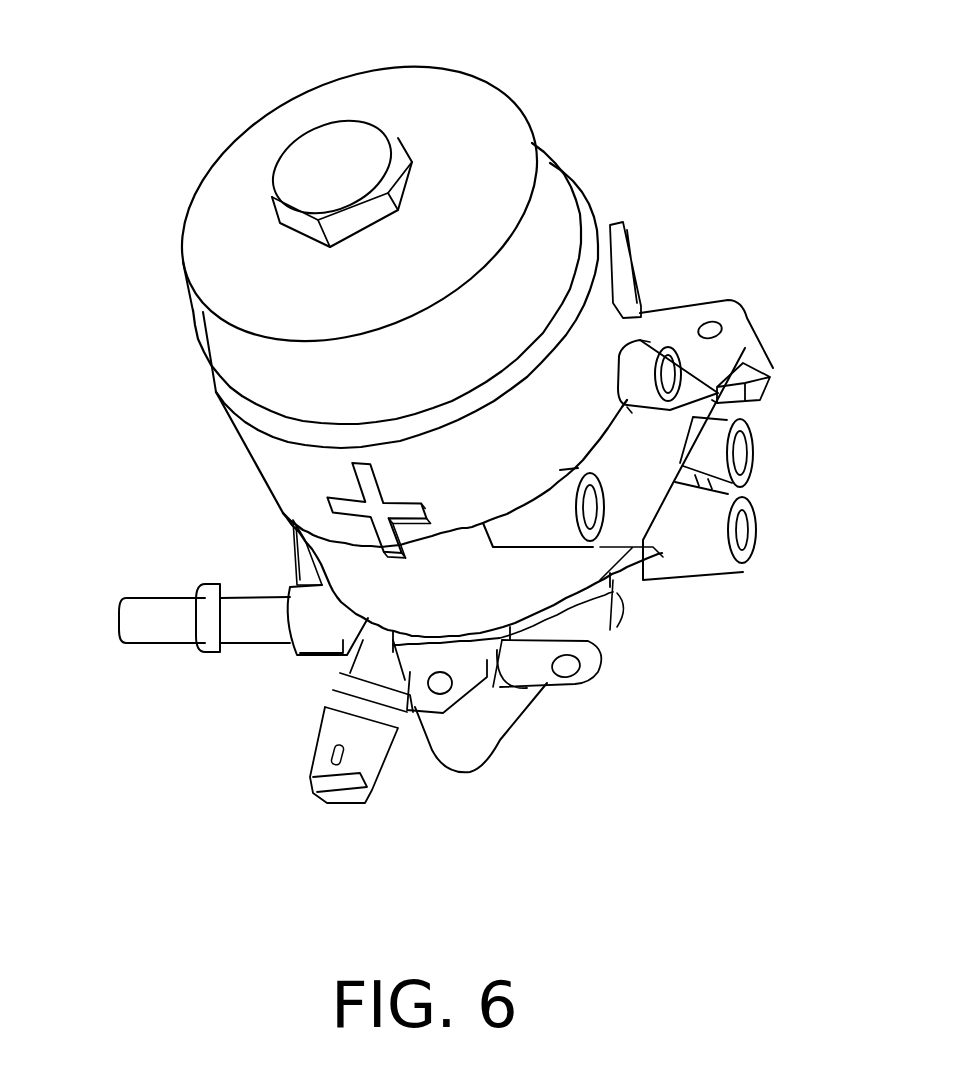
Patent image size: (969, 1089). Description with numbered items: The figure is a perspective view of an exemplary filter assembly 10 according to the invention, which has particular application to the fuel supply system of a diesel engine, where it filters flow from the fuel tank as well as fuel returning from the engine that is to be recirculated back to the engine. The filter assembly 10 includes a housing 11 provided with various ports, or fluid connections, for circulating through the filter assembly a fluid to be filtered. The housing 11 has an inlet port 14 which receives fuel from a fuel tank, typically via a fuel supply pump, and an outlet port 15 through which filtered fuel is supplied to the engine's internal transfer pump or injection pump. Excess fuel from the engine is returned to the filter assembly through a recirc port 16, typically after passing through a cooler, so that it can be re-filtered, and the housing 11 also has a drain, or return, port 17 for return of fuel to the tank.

The filter assembly 10 is at (200, 88).
The housing 11 is at (588, 178).
The inlet port 14 is at (614, 520).
The outlet port 15 is at (150, 652).
The recirc port 16 is at (765, 450).
The drain port 17 is at (770, 530).